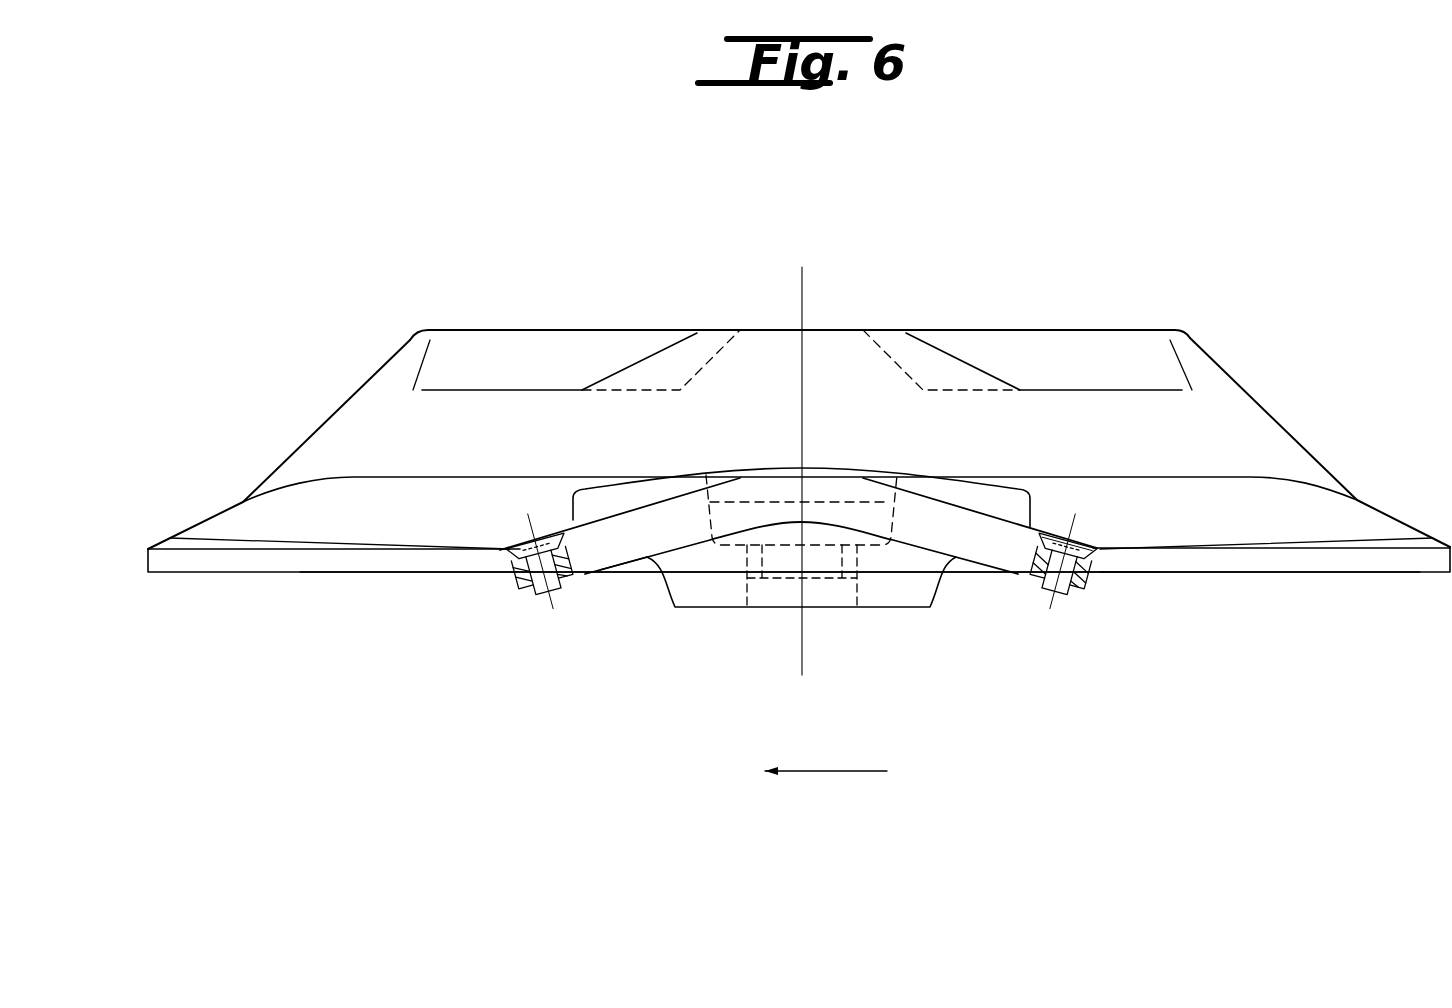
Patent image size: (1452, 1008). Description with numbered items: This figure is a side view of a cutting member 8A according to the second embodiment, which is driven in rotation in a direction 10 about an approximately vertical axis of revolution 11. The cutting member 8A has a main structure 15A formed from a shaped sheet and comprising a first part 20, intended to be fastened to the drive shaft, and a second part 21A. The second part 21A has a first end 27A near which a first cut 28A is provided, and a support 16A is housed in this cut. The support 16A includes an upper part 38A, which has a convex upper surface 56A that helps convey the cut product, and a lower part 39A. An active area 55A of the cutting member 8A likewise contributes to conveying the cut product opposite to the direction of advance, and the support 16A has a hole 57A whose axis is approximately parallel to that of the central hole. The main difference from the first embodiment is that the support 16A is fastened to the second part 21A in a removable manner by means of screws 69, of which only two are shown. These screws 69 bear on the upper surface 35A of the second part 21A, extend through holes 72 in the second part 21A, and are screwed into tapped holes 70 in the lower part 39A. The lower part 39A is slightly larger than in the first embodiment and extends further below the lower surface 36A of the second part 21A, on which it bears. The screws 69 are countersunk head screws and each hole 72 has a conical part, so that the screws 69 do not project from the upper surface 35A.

The cutting member 8A is at (1105, 330).
The direction of rotation 10 is at (833, 771).
The axis of revolution 11 is at (802, 295).
The main structure 15A is at (1278, 407).
The support 16A is at (632, 562).
The first part 20 is at (885, 328).
The second part 21A is at (275, 573).
The first end 27A is at (1133, 576).
The first cut 28A is at (1027, 538).
The upper surface 35A is at (1252, 528).
The lower surface 36A is at (1373, 572).
The upper part 38A is at (953, 488).
The lower part 39A is at (722, 607).
The active area 55A is at (630, 503).
The convex upper surface 56A is at (685, 487).
The hole 57A is at (856, 583).
The screws 69 is at (551, 598).
The tapped holes 70 is at (520, 574).
The holes 72 is at (520, 548).